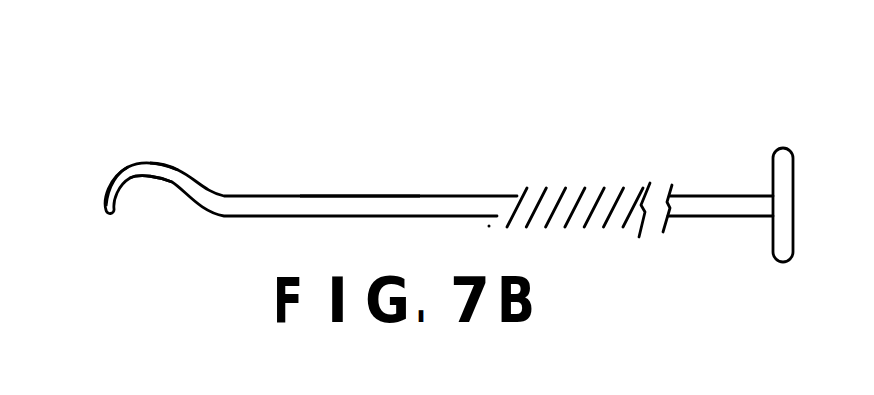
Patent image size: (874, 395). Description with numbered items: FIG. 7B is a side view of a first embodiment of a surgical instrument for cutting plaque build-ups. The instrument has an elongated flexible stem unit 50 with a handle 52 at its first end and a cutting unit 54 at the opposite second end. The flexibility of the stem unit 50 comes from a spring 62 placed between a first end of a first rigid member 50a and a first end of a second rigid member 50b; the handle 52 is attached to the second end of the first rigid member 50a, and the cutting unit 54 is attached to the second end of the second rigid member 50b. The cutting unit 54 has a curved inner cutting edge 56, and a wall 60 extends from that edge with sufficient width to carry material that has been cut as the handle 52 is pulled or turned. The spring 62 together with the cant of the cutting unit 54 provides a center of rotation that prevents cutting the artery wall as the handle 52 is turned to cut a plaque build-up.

The elongated flexible stem unit 50 is at (473, 193).
The first rigid member 50a is at (727, 193).
The second rigid member 50b is at (335, 193).
The handle 52 is at (793, 167).
The cutting unit 54 is at (178, 168).
The inner cutting edge 56 is at (147, 177).
The wall 60 is at (123, 168).
The spring 62 is at (590, 162).